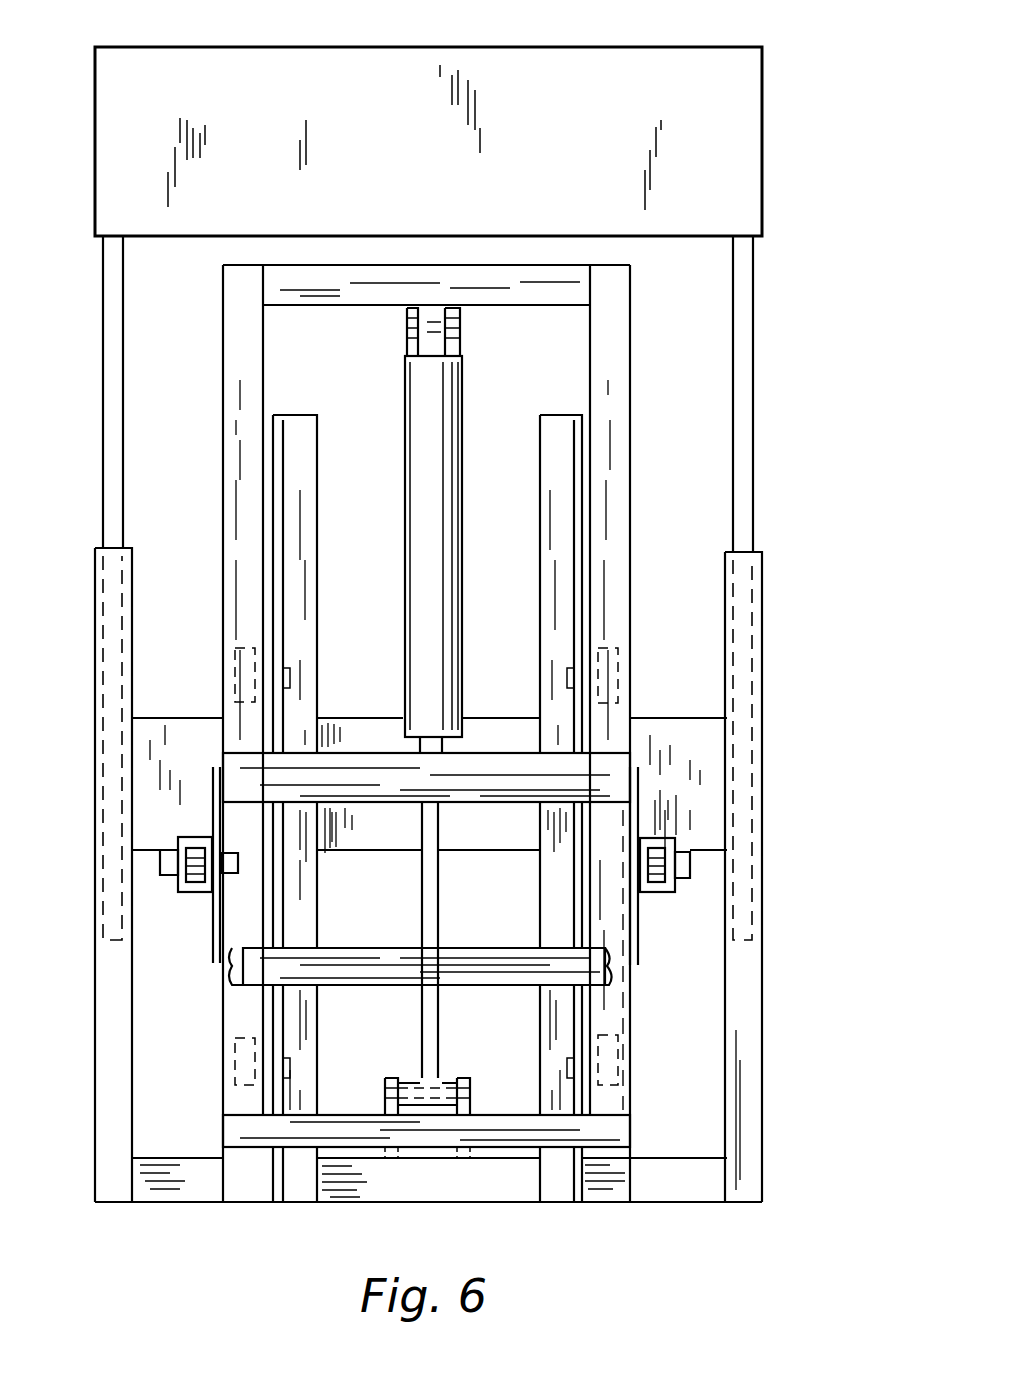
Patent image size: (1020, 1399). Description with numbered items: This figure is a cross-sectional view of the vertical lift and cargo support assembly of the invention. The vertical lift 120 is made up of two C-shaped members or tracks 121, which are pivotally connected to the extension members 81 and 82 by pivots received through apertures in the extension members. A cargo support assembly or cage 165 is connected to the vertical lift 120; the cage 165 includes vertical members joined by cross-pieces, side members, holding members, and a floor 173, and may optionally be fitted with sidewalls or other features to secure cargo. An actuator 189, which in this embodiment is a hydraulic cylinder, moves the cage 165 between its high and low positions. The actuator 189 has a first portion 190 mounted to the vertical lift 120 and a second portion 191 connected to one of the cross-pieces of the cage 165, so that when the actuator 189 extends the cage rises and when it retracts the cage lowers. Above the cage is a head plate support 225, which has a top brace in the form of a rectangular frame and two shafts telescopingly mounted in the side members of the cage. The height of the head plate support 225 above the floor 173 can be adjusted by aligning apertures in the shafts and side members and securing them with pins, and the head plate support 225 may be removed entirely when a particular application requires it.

The head plate support 225 is at (430, 12).
The cargo support assembly or cage 165 is at (765, 606).
The floor 173 is at (669, 1178).
The C-shaped members or tracks 121 is at (232, 346).
The vertical lift 120 is at (645, 484).
The first portion 190 is at (460, 326).
The actuator 189 is at (457, 500).
The second portion 191 is at (468, 1085).
The extension member 82 is at (196, 893).
The extension member 81 is at (650, 893).